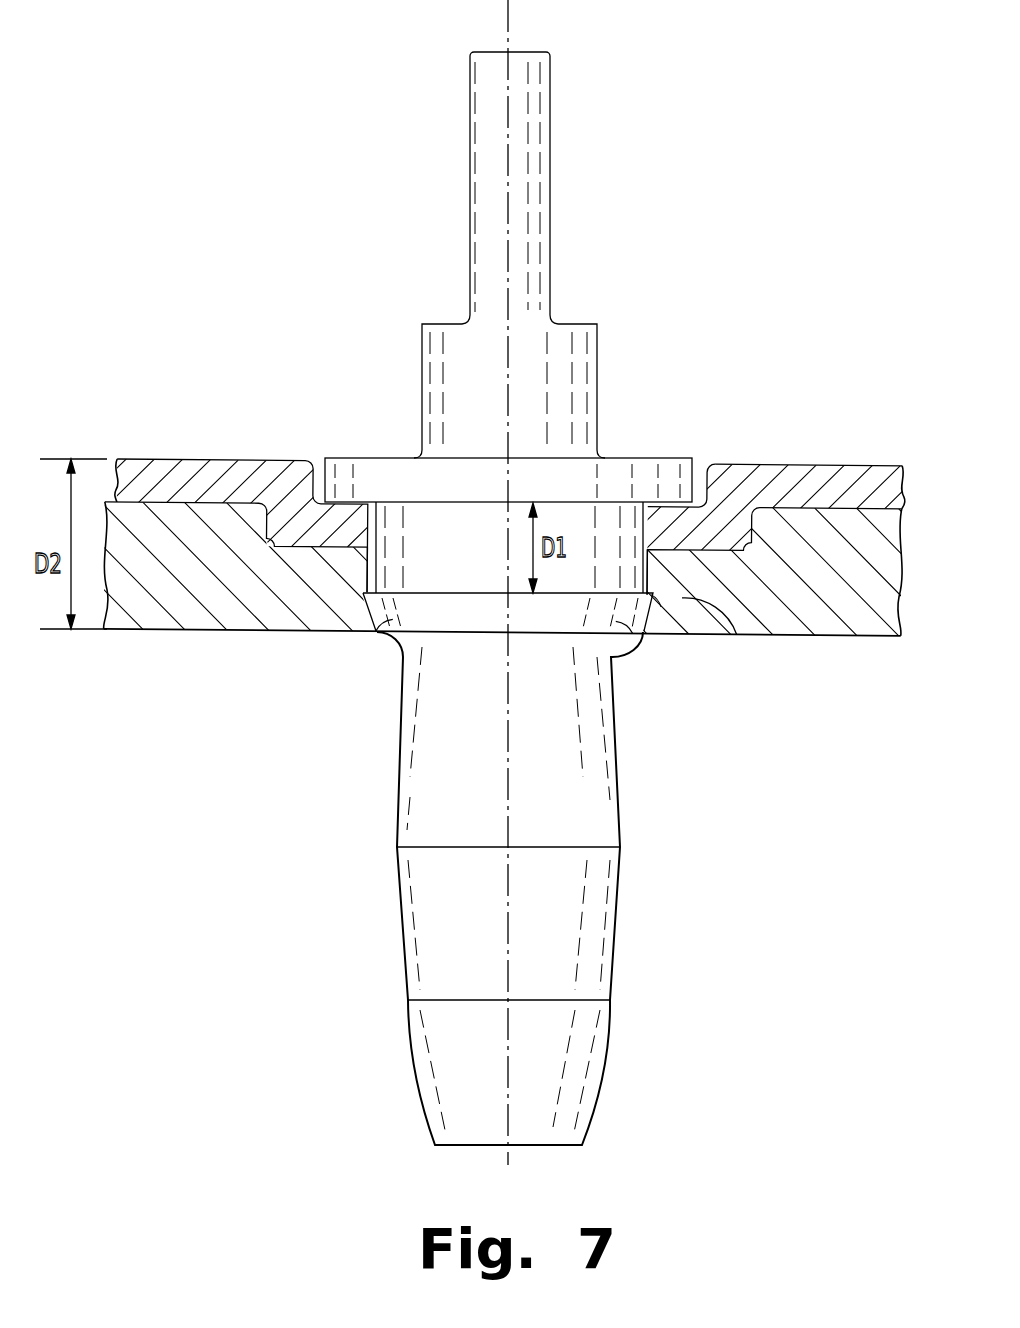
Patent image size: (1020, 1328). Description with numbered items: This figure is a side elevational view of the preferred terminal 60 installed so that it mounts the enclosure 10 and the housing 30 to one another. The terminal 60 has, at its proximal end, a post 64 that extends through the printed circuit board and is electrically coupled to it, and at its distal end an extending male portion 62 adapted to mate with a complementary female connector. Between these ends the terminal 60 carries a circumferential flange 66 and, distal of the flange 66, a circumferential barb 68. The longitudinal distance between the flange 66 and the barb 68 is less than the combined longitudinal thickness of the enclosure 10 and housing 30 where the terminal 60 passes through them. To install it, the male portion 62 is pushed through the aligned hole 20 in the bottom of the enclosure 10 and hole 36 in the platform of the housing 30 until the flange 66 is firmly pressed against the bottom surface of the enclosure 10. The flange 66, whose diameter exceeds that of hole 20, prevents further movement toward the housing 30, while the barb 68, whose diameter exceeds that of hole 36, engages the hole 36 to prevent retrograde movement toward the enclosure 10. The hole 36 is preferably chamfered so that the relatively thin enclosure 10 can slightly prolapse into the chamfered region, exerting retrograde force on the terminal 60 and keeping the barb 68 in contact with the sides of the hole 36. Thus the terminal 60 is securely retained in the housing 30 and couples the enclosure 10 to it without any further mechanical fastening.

The terminal 60 is at (584, 572).
The post 64 is at (470, 140).
The circumferential flange 66 is at (655, 458).
The male portion 62 is at (618, 920).
The circumferential barb 68 is at (378, 634).
The enclosure 10 is at (862, 464).
The housing 30 is at (873, 628).
The hole 20 is at (738, 631).
The hole 36 is at (648, 636).